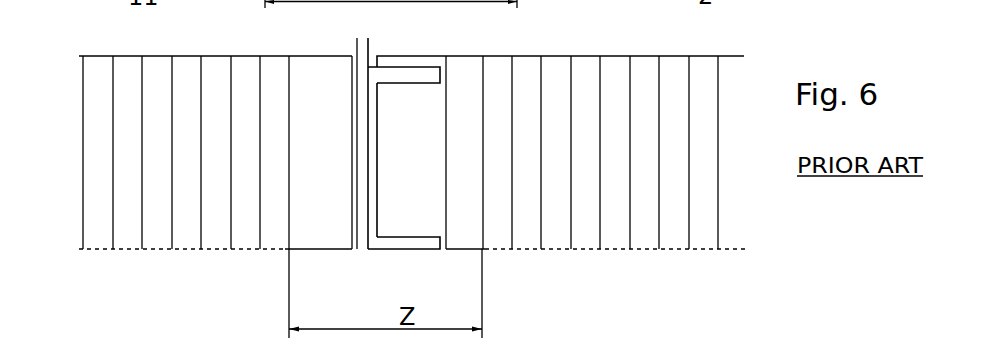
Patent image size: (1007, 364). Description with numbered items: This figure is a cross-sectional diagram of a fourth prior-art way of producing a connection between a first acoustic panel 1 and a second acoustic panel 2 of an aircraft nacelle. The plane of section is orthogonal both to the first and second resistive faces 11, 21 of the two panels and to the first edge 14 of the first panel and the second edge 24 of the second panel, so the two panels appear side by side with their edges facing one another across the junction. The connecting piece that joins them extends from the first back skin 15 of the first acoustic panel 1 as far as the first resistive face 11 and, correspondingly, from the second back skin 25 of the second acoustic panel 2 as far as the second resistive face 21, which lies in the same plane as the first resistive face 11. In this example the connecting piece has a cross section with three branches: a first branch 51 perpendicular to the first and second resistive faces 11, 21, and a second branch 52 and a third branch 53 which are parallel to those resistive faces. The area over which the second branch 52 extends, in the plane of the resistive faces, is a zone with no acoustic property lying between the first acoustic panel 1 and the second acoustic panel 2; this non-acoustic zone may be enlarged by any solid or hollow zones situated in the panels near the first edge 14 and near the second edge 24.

The first acoustic panel 1 is at (190, 160).
The second acoustic panel 2 is at (570, 161).
The first resistive face 11 is at (215, 250).
The first edge 14 is at (357, 40).
The first back skin 15 is at (220, 56).
The second resistive face 21 is at (633, 250).
The second edge 24 is at (378, 58).
The second back skin 25 is at (700, 56).
The first branch 51 is at (419, 156).
The second branch 52 is at (422, 243).
The third branch 53 is at (408, 77).